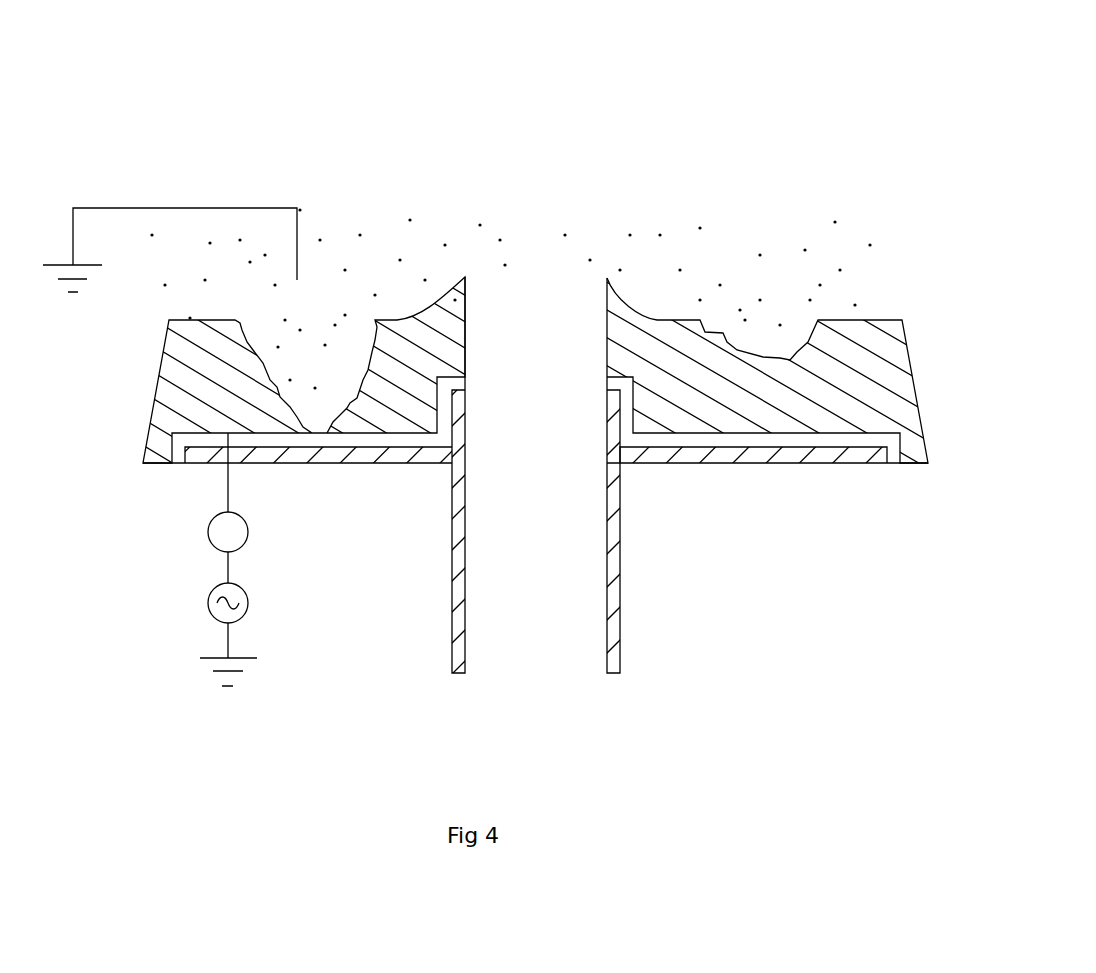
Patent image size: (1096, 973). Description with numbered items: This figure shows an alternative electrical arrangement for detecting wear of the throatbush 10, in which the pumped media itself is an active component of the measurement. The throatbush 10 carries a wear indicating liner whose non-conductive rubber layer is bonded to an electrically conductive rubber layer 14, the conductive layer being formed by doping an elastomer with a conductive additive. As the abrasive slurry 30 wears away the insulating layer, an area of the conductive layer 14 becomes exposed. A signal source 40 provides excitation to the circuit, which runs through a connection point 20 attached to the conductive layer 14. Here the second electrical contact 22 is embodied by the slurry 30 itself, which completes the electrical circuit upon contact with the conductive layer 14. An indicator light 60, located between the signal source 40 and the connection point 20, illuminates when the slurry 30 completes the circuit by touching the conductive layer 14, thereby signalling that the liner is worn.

The throatbush 10 is at (653, 96).
The conductive rubber layer 14 is at (726, 440).
The connection point 20 is at (223, 483).
The electrical contact 22 is at (140, 208).
The slurry 30 is at (746, 252).
The signal source 40 is at (202, 605).
The indicator light 60 is at (248, 528).